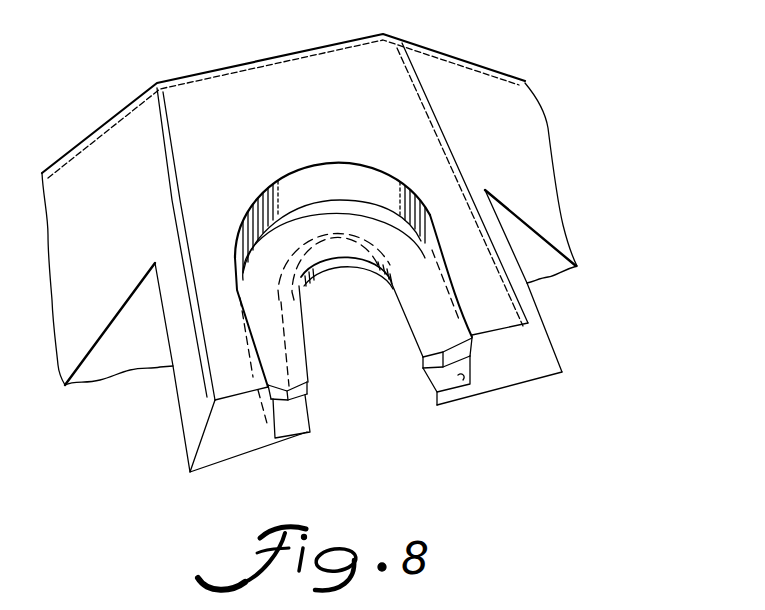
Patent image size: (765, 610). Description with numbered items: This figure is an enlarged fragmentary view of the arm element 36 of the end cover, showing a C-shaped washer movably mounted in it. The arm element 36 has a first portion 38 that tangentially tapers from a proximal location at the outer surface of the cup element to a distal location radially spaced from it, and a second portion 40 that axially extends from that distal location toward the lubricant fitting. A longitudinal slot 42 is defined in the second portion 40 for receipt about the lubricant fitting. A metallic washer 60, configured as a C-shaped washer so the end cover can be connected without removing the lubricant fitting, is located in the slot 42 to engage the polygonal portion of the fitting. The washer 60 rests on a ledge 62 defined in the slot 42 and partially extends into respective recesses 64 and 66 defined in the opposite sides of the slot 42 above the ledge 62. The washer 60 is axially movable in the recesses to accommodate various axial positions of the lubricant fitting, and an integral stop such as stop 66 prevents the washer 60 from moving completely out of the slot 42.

The arm element 36 is at (485, 51).
The first portion 38 is at (530, 160).
The second portion 40 is at (213, 97).
The longitudinal slot 42 is at (322, 173).
The washer 60 is at (323, 267).
The ledge 62 is at (310, 426).
The recess 64 is at (455, 347).
The recess 66 is at (462, 378).